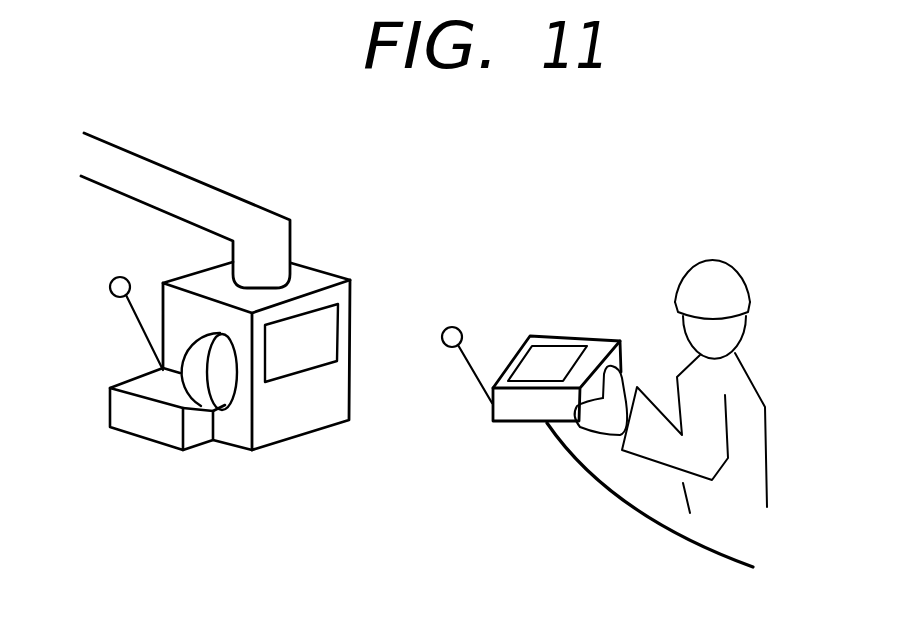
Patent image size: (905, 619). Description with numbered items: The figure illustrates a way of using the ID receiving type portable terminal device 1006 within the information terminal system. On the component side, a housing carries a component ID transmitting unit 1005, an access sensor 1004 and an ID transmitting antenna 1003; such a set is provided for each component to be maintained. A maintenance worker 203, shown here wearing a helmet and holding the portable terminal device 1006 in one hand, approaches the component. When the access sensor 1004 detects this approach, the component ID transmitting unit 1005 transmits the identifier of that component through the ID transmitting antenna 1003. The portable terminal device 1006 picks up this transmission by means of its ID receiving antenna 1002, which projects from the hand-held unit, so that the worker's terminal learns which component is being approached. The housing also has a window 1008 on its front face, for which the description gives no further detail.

The ID receiving antenna 1002 is at (466, 368).
The ID transmitting antenna 1003 is at (140, 327).
The access sensor 1004 is at (230, 408).
The component ID transmitting unit 1005 is at (137, 377).
The ID receiving type portable terminal device 1006 is at (557, 362).
The display window of fixed unit 1008 is at (322, 338).
The maintenance worker 203 is at (752, 402).